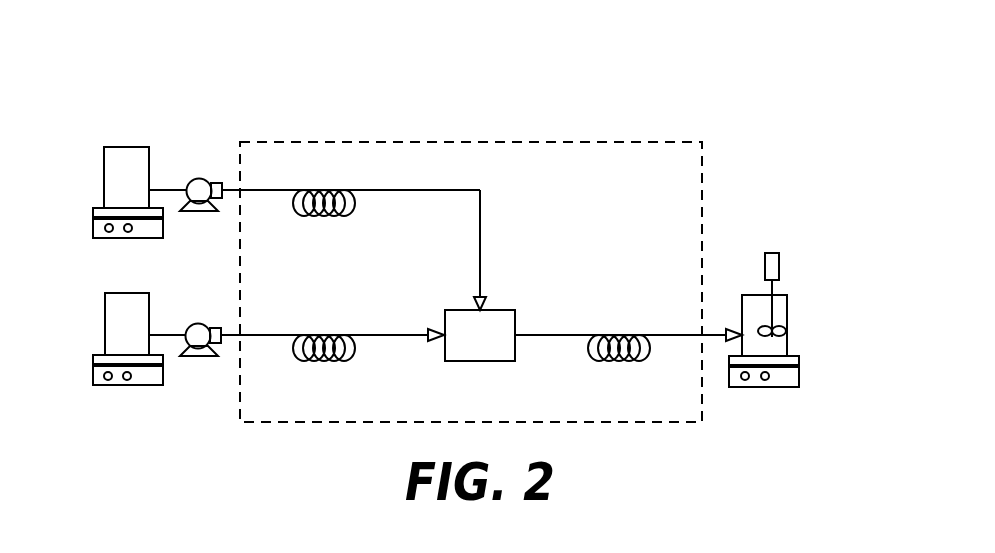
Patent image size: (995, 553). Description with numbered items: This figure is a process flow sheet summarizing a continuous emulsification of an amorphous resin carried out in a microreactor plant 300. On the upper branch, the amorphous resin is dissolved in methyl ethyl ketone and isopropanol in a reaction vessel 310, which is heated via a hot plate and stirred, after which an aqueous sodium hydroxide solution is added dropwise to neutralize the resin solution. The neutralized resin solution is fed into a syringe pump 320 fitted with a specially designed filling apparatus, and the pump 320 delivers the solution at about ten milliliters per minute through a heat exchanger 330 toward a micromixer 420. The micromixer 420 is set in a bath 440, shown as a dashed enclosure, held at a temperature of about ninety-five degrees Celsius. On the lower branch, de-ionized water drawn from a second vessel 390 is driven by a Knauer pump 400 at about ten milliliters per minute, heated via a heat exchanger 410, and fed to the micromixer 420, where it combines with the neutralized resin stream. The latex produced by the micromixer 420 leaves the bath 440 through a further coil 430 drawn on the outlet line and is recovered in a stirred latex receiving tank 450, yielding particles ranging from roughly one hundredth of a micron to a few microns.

The microreactor plant 300 is at (119, 44).
The reaction vessel 310 is at (104, 180).
The syringe pump 320 is at (194, 179).
The heat exchanger 330 is at (320, 190).
The second reservoir vessel 390 is at (105, 323).
The Knauer pump 400 is at (193, 324).
The heat exchanger 410 is at (320, 334).
The micromixer 420 is at (480, 362).
The third coil 430 is at (613, 336).
The bath 440 is at (483, 142).
The latex receiving tank 450 is at (787, 326).